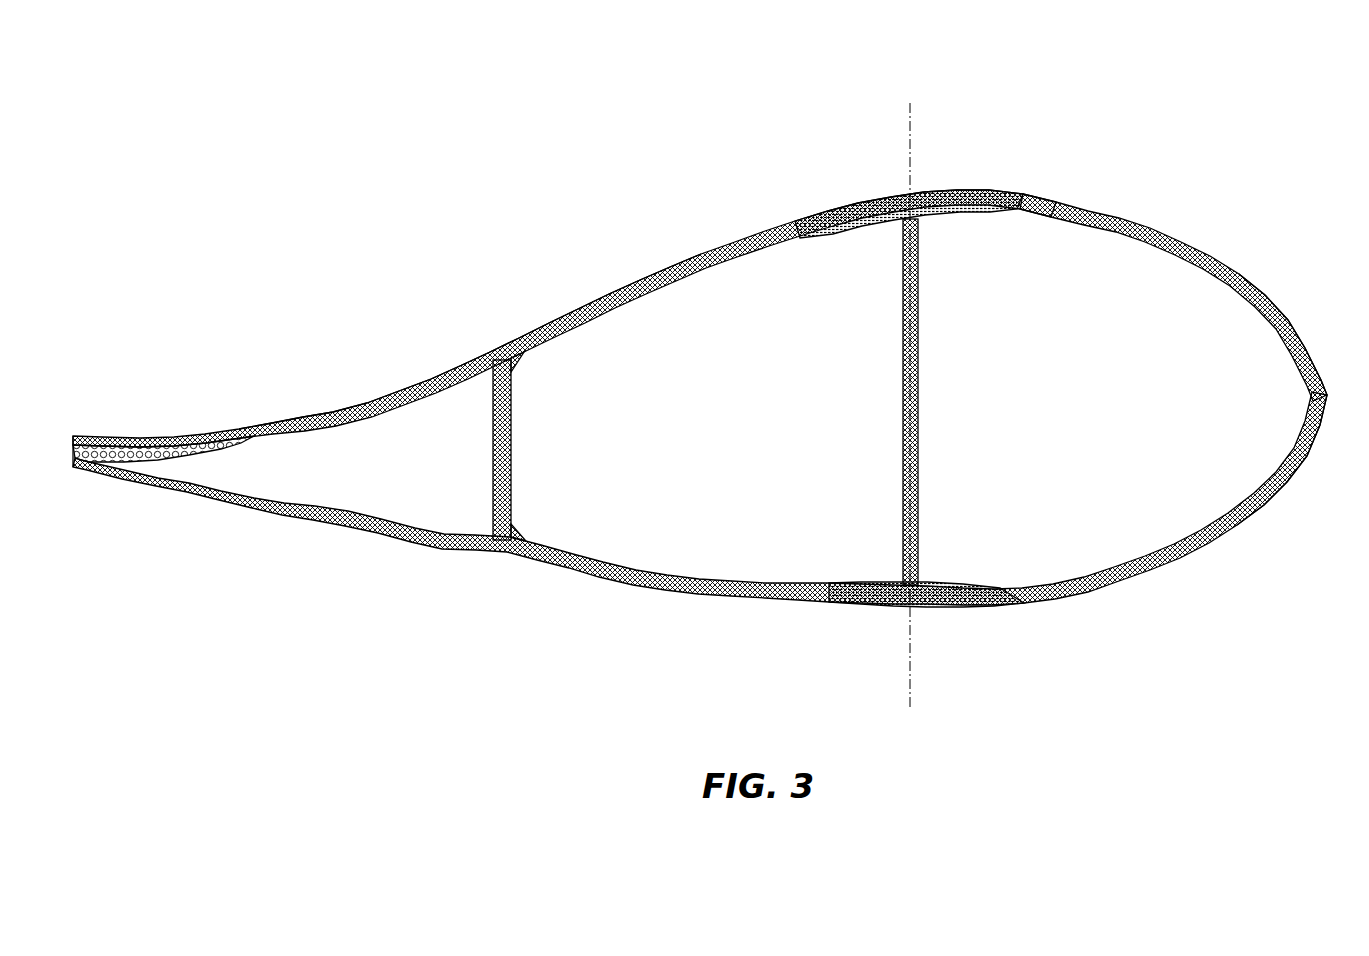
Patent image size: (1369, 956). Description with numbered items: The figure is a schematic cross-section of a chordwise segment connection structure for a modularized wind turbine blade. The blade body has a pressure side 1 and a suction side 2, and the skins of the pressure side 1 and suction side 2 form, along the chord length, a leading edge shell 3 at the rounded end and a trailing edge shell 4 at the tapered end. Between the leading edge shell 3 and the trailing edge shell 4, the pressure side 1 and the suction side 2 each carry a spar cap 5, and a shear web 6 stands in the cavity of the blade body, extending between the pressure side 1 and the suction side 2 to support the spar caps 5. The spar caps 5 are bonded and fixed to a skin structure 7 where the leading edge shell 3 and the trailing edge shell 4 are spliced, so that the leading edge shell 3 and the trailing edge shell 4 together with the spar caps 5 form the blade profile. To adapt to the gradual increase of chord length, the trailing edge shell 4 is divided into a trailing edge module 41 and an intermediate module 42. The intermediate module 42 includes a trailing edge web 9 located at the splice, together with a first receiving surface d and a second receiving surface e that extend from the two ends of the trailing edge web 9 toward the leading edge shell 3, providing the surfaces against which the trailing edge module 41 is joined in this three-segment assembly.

The pressure side 1 is at (713, 232).
The suction side 2 is at (750, 620).
The leading edge shell 3 is at (1287, 317).
The trailing edge shell 4 is at (178, 418).
The trailing edge module 41 is at (355, 395).
The intermediate module 42 is at (598, 303).
The spar cap 5 is at (932, 206).
The shear web 6 is at (918, 432).
The skin structure 7 is at (1033, 220).
The trailing edge web 9 is at (512, 456).
The second receiving surface e is at (520, 343).
The first receiving surface d is at (530, 558).